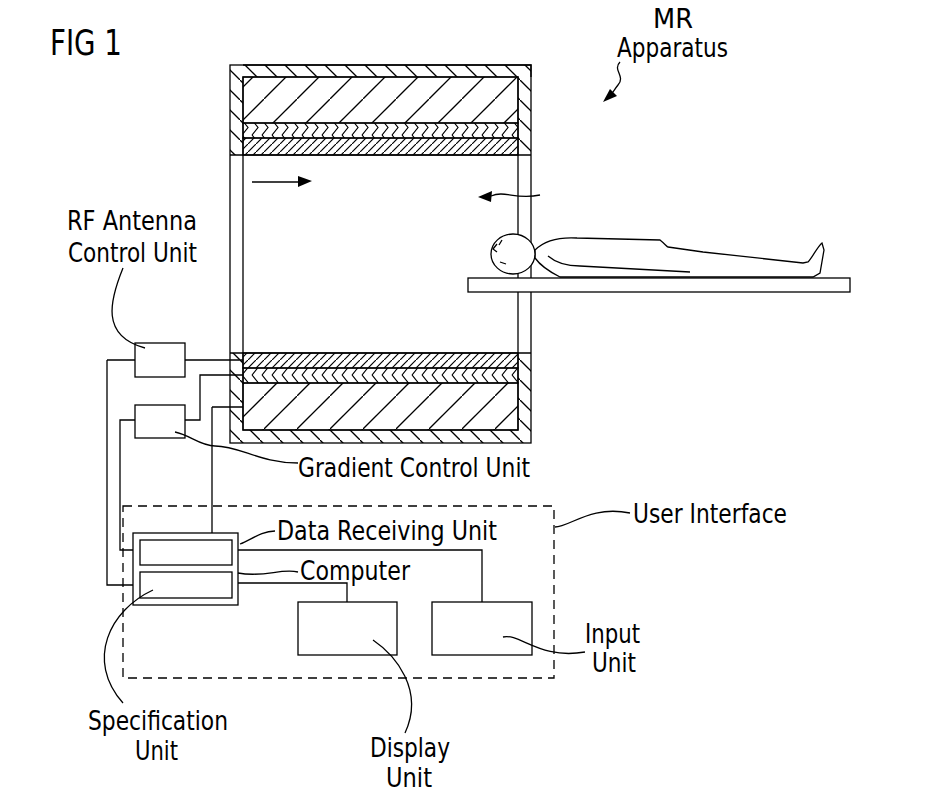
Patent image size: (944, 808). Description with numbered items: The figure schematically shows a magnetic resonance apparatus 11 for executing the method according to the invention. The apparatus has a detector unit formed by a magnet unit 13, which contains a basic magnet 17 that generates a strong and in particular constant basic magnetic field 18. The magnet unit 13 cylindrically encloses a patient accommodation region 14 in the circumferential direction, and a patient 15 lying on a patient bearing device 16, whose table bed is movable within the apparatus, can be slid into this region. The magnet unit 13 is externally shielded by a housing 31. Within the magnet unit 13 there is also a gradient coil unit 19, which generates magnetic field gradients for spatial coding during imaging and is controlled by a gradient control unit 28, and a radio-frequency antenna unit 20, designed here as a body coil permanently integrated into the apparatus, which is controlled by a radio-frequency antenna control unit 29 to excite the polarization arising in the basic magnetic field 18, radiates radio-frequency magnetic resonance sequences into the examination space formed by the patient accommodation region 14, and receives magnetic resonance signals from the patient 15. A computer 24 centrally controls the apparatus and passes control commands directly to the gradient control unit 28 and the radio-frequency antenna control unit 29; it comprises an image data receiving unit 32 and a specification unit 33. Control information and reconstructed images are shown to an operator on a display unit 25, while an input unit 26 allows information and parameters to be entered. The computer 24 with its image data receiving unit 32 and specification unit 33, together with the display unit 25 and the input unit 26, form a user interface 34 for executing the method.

The magnetic resonance apparatus 11 is at (616, 140).
The magnet unit 13 is at (215, 88).
The patient accommodation region 14 is at (522, 189).
The patient 15 is at (705, 258).
The patient bearing device 16 is at (735, 287).
The basic magnet 17 is at (510, 115).
The basic magnetic field 18 is at (252, 182).
The gradient coil unit 19 is at (243, 128).
The radio-frequency antenna unit 20 is at (243, 148).
The computer 24 is at (145, 608).
The display unit 25 is at (352, 655).
The input unit 26 is at (478, 655).
The gradient control unit 28 is at (140, 440).
The radio-frequency antenna control unit 29 is at (165, 343).
The housing 31 is at (524, 72).
The image data receiving unit 32 is at (225, 545).
The specification unit 33 is at (185, 608).
The user interface 34 is at (555, 550).